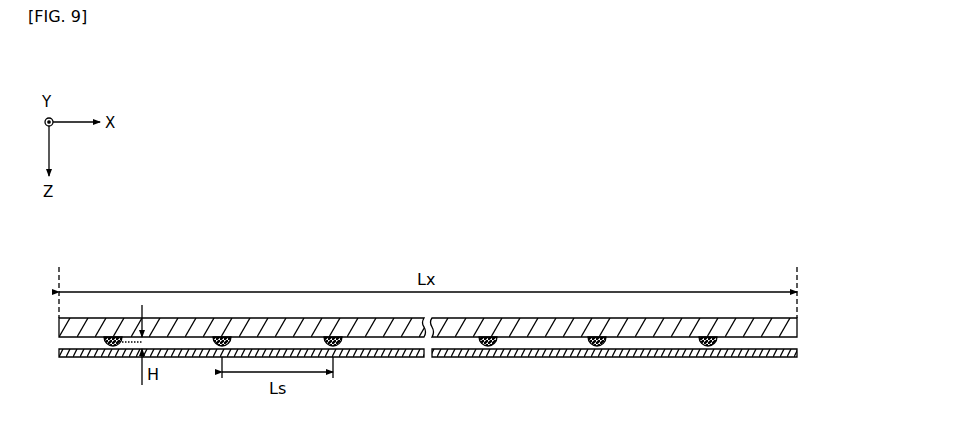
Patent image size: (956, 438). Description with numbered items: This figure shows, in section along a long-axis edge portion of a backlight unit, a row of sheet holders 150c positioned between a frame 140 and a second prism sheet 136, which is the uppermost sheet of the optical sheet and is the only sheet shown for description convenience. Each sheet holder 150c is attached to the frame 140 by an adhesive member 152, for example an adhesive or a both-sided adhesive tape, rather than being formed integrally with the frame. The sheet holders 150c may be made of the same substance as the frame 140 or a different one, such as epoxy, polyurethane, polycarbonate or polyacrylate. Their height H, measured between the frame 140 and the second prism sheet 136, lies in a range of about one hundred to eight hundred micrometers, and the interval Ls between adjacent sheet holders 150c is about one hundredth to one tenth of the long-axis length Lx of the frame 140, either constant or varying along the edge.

The frame 140 is at (797, 327).
The second prism sheet 136 is at (797, 353).
The sheet holder 150c is at (488, 357).
The adhesive member 152 is at (597, 357).